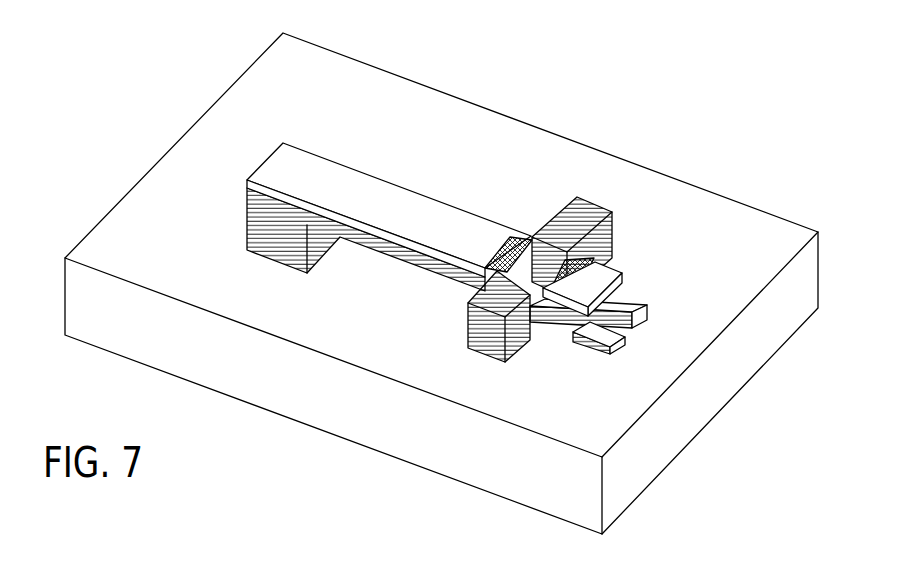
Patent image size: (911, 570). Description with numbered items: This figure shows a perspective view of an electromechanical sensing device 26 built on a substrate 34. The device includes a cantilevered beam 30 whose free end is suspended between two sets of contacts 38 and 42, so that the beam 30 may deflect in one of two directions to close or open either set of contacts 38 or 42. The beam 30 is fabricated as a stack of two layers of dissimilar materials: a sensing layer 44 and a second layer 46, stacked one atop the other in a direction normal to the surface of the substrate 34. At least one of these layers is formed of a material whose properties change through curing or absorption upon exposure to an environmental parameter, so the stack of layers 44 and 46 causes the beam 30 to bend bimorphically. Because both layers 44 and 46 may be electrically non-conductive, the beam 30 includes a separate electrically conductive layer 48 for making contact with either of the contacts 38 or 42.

The sensing device 26 is at (577, 72).
The cantilevered beam 30 is at (359, 118).
The substrate 34 is at (680, 417).
The contacts 38 is at (625, 344).
The contacts 42 is at (593, 216).
The sensing layer 44 is at (420, 185).
The second layer 46 is at (375, 261).
The electrically conductive layer 48 is at (501, 237).